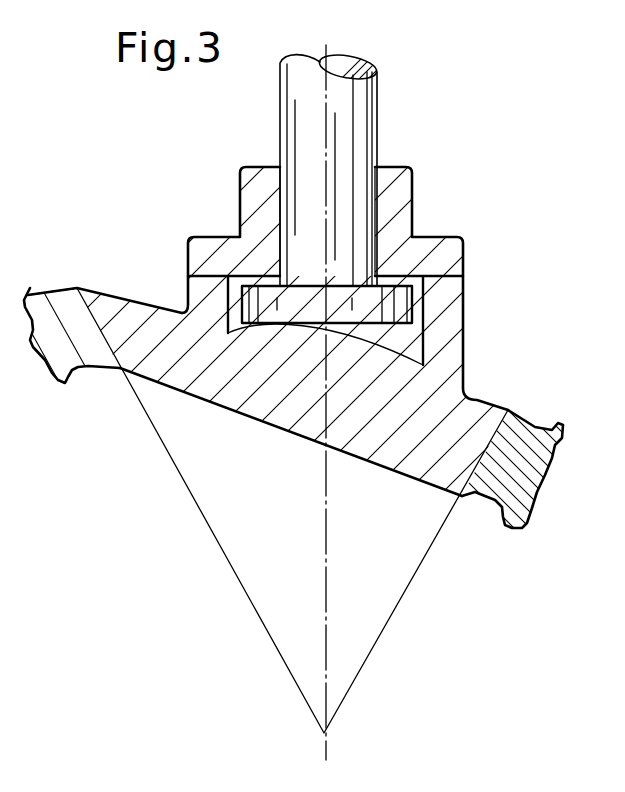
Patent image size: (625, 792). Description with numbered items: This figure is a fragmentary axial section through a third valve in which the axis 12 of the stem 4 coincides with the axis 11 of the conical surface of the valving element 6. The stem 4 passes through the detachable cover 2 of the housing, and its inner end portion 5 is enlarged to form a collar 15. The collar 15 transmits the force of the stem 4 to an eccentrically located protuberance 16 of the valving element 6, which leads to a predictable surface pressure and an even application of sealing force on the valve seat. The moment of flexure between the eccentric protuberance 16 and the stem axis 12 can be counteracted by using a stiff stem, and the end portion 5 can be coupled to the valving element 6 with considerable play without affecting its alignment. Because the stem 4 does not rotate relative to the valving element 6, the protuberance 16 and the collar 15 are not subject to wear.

The cover 2 is at (445, 258).
The stem 4 is at (298, 108).
The inner end portion of the stem 5 is at (298, 175).
The valving element 6 is at (443, 460).
The axis of the conical surface 11 is at (323, 547).
The axis of the stem 12 is at (327, 138).
The collar 15 is at (390, 306).
The protuberance 16 is at (264, 329).